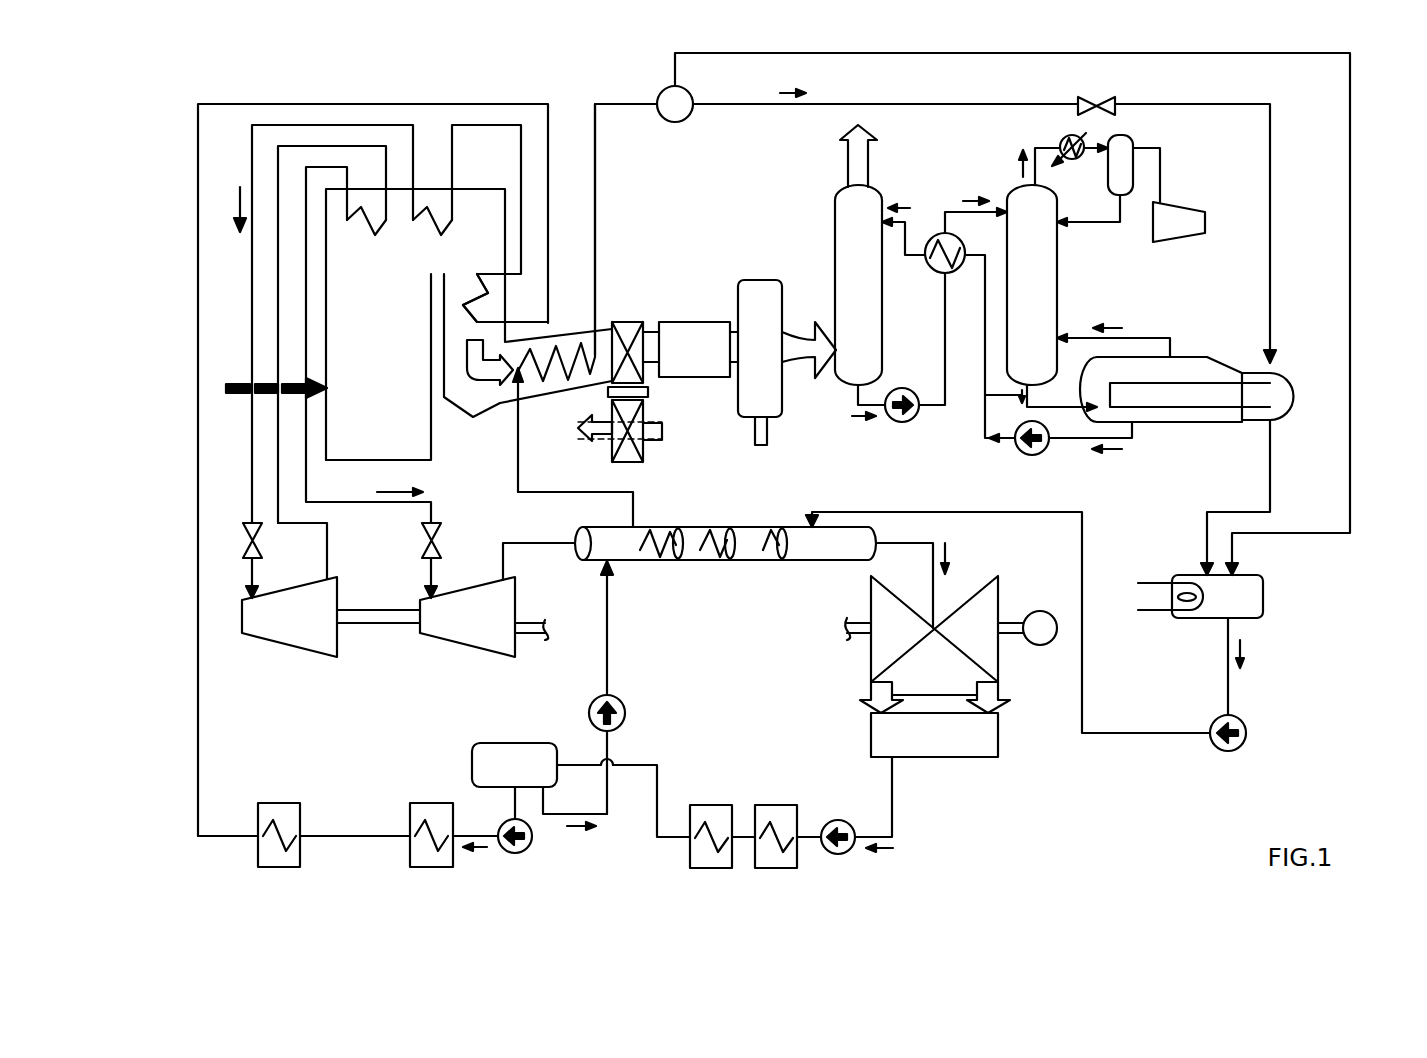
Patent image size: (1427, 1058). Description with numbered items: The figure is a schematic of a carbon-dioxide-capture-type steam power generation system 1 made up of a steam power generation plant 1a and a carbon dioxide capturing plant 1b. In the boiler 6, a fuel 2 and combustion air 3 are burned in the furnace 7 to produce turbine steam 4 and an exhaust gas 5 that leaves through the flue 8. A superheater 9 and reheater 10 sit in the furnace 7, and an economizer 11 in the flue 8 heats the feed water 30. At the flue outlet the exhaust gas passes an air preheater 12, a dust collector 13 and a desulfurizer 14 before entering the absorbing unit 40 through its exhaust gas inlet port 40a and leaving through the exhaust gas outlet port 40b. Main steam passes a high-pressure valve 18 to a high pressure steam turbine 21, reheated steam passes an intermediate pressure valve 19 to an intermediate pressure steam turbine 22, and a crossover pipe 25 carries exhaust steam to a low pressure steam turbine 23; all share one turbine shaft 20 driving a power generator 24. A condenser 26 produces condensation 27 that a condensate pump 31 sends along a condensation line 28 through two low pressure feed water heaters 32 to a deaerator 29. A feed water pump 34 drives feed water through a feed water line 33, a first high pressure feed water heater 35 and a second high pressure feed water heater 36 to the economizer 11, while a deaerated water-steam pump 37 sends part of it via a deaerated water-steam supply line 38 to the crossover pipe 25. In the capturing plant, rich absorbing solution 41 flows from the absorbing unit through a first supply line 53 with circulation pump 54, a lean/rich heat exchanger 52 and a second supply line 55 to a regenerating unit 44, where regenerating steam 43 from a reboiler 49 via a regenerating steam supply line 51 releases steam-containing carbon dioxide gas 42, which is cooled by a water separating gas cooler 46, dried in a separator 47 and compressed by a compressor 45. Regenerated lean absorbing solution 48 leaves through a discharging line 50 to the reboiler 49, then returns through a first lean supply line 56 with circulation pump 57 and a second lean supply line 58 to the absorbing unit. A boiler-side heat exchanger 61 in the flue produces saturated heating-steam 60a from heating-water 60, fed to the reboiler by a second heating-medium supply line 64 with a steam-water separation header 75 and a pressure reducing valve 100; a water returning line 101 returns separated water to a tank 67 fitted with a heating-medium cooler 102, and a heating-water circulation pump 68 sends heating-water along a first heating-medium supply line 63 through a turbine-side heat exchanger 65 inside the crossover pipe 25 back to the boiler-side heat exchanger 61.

The carbon-dioxide-capture-type steam power generation system 1 is at (176, 110).
The steam power generation plant 1a is at (197, 153).
The carbon dioxide capturing plant 1b is at (1352, 154).
The fuel 2 is at (237, 380).
The combustion air 3 is at (665, 432).
The turbine steam 4 is at (240, 185).
The exhaust gas 5 is at (482, 405).
The boiler 6 is at (363, 289).
The furnace 7 is at (368, 422).
The flue 8 is at (458, 410).
The superheater 9 is at (425, 233).
The reheater 10 is at (361, 235).
The economizer 11 is at (468, 300).
The air preheater 12 is at (630, 322).
The dust collector 13 is at (695, 322).
The desulfurizer 14 is at (738, 388).
The high-pressure valve 18 is at (243, 535).
The intermediate pressure valve 19 is at (420, 540).
The turbine shaft 20 is at (383, 628).
The high pressure steam turbine 21 is at (295, 590).
The intermediate pressure steam turbine 22 is at (470, 590).
The low pressure steam turbine 23 is at (880, 650).
The power generator 24 is at (1040, 648).
The crossover pipe 25 is at (690, 565).
The condenser 26 is at (970, 757).
The condensation 27 is at (880, 850).
The condensation line 28 is at (667, 833).
The deaerator 29 is at (515, 745).
The feed water 30 is at (578, 828).
The condensate pump 31 is at (836, 820).
The low pressure feed water heaters 32 is at (780, 805).
The feed water line 33 is at (198, 770).
The feed water pump 34 is at (527, 849).
The first high pressure feed water heater 35 is at (432, 803).
The second high pressure feed water heater 36 is at (277, 803).
The deaerated water-steam pump 37 is at (626, 713).
The deaerated water-steam supply line 38 is at (615, 652).
The absorbing unit 40 is at (835, 237).
The exhaust gas inlet port 40a is at (814, 426).
The exhaust gas outlet port 40b is at (835, 192).
The carbon-dioxide-containing rich absorbing solution 41 is at (860, 420).
The steam-containing carbon dioxide gas 42 is at (1025, 152).
The regenerating steam 43 is at (1110, 320).
The regenerating unit 44 is at (1060, 255).
The compressor 45 is at (1195, 205).
The water separating gas cooler 46 is at (1078, 162).
The separator 47 is at (1130, 137).
The regenerated lean absorbing solution 48 is at (905, 205).
The reboiler 49 is at (1190, 425).
The regenerated lean absorbing solution discharging line 50 is at (1060, 442).
The regenerating steam supply line 51 is at (1175, 332).
The lean/rich heat exchanger 52 is at (932, 238).
The first carbon-dioxide-containing rich absorbing solution supply line 53 is at (945, 350).
The rich absorbing-solution circulation pump 54 is at (905, 422).
The second carbon-dioxide-containing rich absorbing solution supply line 55 is at (950, 210).
The first regenerated lean absorbing solution supply line 56 is at (985, 352).
The regenerated lean absorbing solution circulation pump 57 is at (1025, 455).
The second regenerated lean absorbing solution supply line 58 is at (918, 258).
The heating-water 60 is at (1248, 652).
The saturated heating-steam 60a is at (780, 93).
The boiler-side heat exchanger 61 is at (576, 342).
The first heating-medium supply line 63 is at (1100, 740).
The second heating-medium supply line 64 is at (975, 104).
The turbine-side heat exchanger 65 is at (705, 527).
The tank 67 is at (1265, 597).
The heating-water circulation pump 68 is at (1215, 752).
The steam-water separation header 75 is at (662, 92).
The pressure reducing valve 100 is at (1098, 97).
The water returning line 101 is at (1350, 80).
The heating-medium cooler 102 is at (1150, 612).